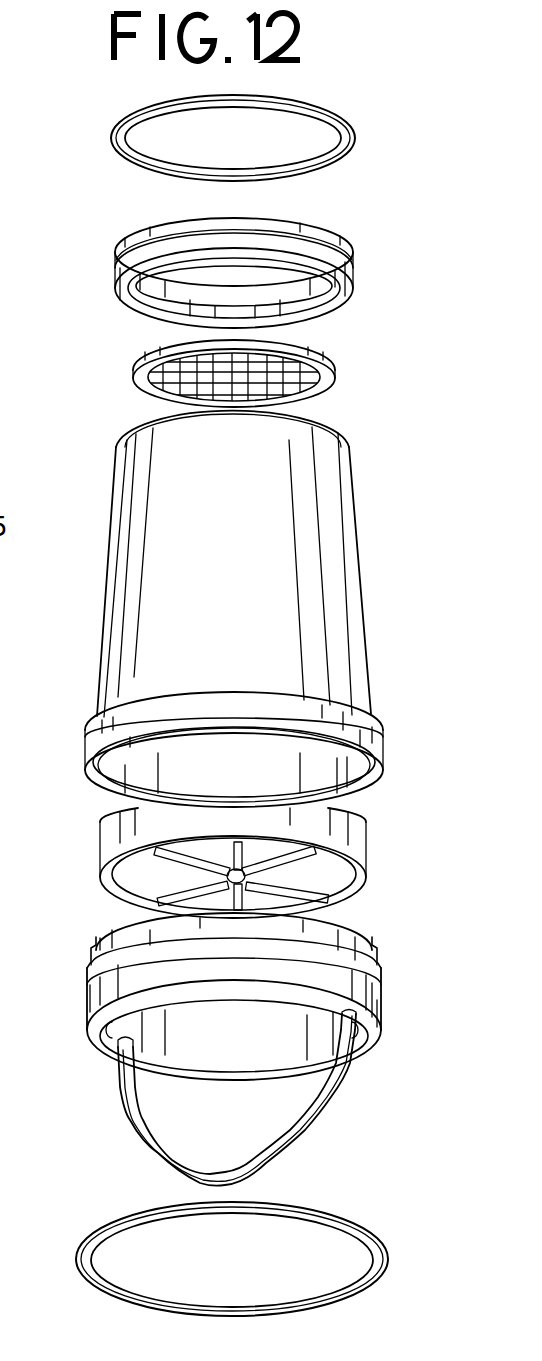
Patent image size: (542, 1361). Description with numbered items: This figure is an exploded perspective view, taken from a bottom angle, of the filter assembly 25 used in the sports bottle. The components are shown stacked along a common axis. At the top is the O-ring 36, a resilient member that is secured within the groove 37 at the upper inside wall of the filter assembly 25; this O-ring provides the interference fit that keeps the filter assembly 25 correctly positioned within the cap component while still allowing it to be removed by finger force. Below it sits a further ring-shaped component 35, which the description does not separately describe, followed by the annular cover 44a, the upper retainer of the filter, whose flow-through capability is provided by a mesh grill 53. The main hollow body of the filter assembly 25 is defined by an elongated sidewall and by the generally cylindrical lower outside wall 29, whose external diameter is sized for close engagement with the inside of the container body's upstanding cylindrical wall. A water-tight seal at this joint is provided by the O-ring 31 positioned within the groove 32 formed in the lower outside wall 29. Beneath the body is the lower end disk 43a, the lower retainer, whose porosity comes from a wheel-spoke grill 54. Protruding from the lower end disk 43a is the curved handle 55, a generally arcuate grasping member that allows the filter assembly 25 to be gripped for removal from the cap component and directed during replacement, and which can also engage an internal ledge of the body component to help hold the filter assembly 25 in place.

The filter assembly 25 is at (359, 567).
The generally cylindrical lower outside wall 29 is at (85, 741).
The O-ring 31 is at (96, 1232).
The groove 32 is at (120, 950).
The retaining ring 35 is at (354, 278).
The O-ring 36 is at (354, 147).
The groove 37 is at (152, 232).
The lower end disk 43a is at (368, 857).
The annular cover 44a is at (335, 382).
The mesh grill 53 is at (147, 392).
The wheel-spoke grill 54 is at (130, 870).
The curved handle 55 is at (336, 1097).